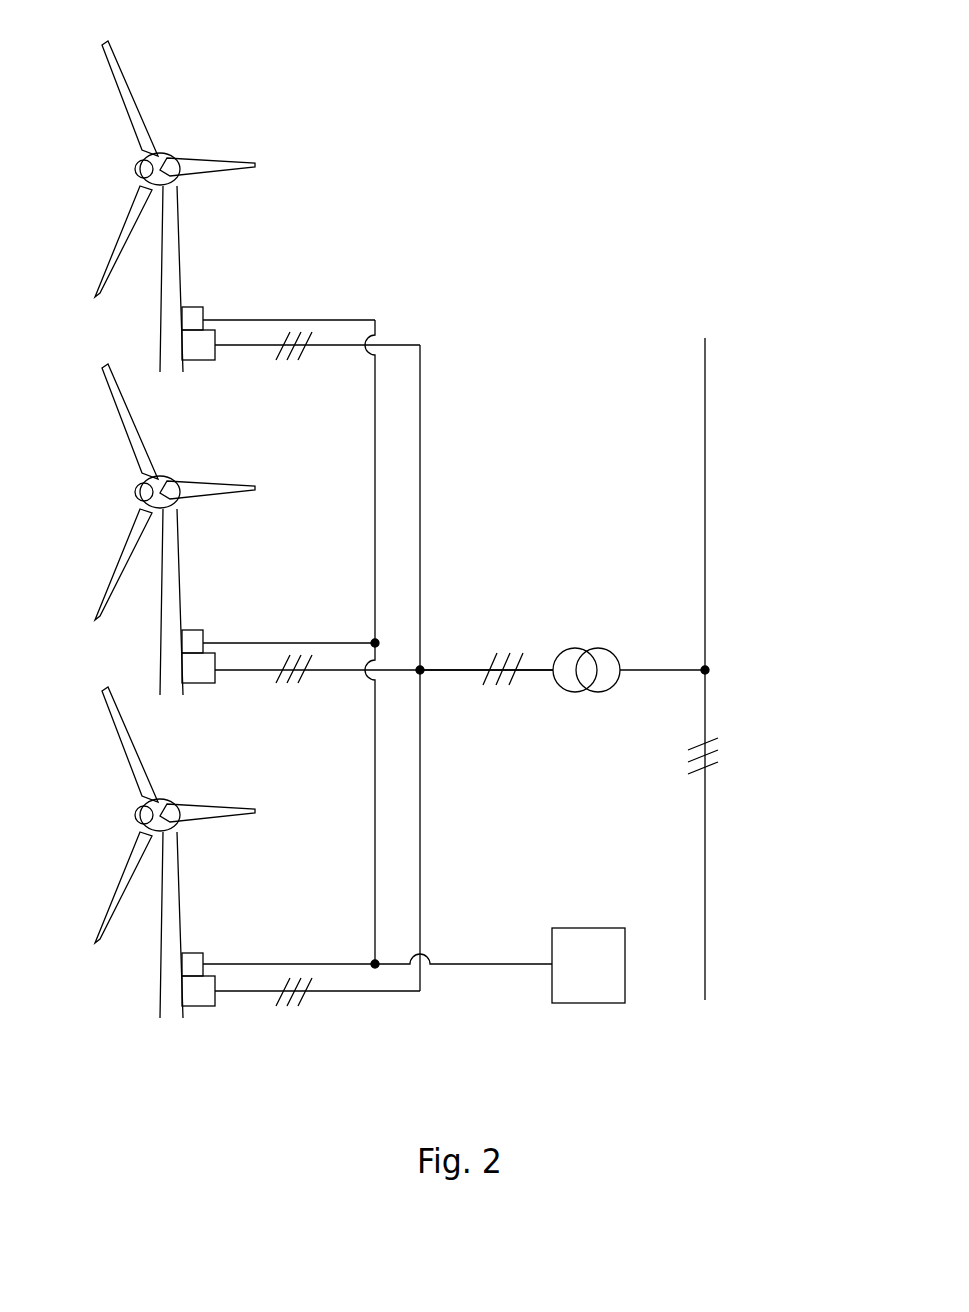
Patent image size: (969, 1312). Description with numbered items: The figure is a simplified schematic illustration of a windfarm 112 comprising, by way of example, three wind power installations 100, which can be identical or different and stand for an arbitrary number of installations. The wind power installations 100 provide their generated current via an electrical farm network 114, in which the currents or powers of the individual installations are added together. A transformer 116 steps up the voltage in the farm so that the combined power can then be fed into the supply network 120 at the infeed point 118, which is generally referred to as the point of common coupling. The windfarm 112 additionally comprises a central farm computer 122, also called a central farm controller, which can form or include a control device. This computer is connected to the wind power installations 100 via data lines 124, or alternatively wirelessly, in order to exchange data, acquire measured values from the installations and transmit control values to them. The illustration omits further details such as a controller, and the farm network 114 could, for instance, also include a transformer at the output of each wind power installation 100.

The wind power installation 100 is at (168, 272).
The windfarm 112 is at (464, 529).
The electrical farm network 114 is at (443, 670).
The transformer 116 is at (596, 622).
The infeed point 118 is at (720, 648).
The supply network 120 is at (705, 410).
The central farm computer 122 is at (580, 928).
The data line 124 is at (375, 805).